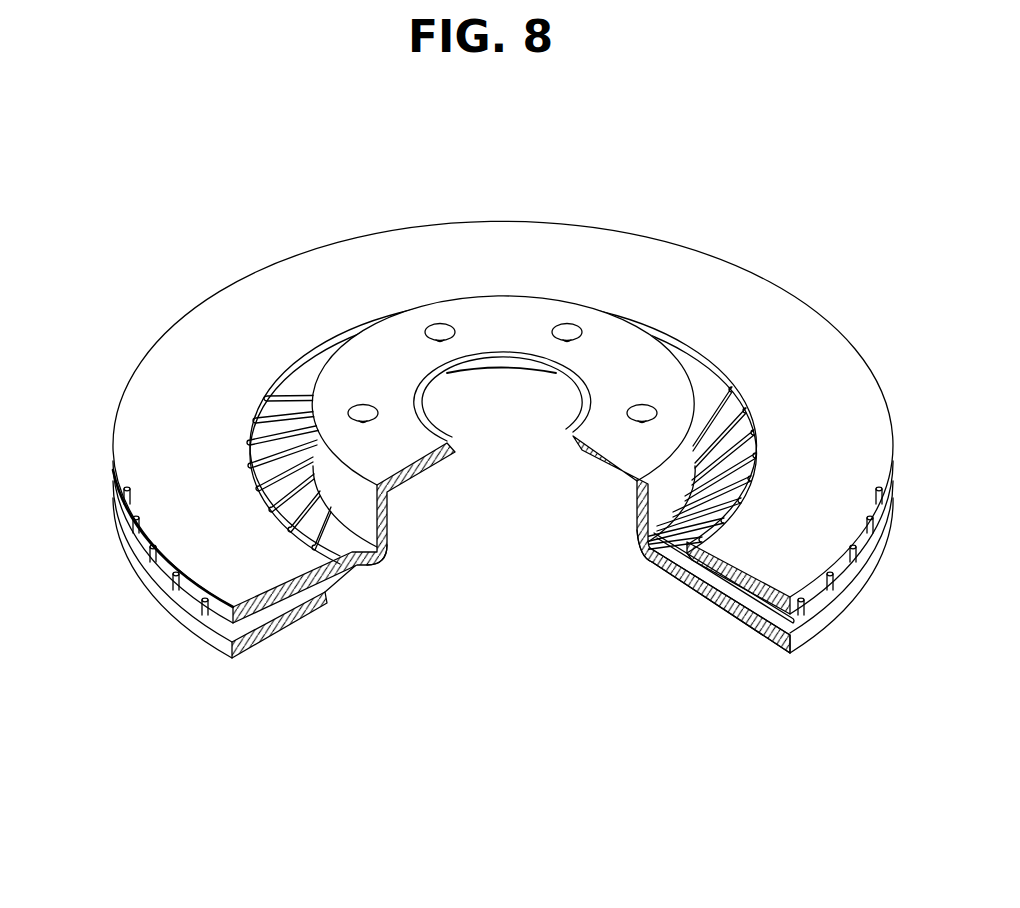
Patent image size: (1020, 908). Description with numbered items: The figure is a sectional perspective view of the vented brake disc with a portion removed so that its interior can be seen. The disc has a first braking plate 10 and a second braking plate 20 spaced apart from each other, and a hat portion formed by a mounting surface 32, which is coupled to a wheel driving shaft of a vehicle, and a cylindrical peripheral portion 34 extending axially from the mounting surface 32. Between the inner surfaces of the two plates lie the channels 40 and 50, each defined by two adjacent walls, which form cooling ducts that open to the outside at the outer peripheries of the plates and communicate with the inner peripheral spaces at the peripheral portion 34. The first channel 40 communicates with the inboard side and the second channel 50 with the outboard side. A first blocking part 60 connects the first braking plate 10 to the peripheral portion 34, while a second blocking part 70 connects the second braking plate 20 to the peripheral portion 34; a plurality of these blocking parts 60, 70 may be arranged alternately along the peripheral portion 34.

The first braking plate 10 is at (765, 273).
The second braking plate 20 is at (793, 653).
The mounting surface 32 is at (528, 313).
The cylindrical peripheral portion 34 is at (343, 485).
The first channel 40 is at (223, 627).
The second channel 50 is at (775, 618).
The first blocking part 60 is at (360, 567).
The second blocking part 70 is at (697, 575).